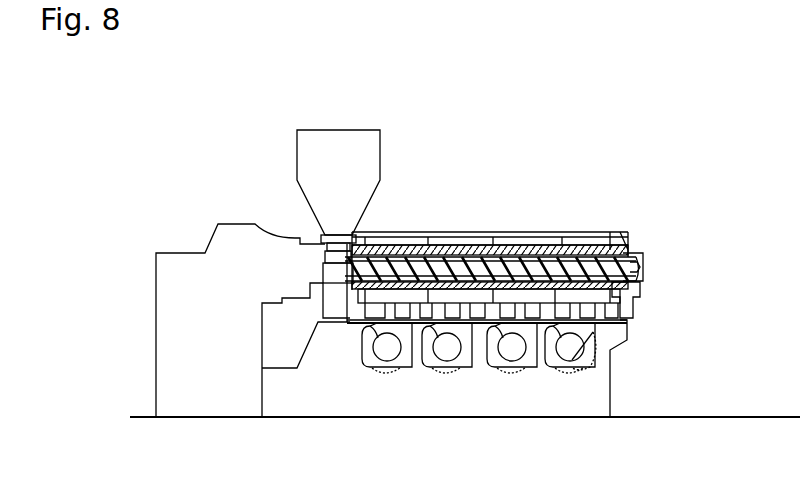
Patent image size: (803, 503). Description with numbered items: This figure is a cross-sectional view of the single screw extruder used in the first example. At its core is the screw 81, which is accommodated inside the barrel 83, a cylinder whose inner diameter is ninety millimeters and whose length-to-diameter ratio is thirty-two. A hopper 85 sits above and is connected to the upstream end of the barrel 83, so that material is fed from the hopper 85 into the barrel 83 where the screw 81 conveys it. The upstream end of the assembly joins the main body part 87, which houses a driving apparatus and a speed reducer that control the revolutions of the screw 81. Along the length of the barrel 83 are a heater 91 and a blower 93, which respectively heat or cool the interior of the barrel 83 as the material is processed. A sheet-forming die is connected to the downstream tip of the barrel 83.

The screw 81 is at (445, 268).
The barrel 83 is at (640, 253).
The hopper 85 is at (352, 130).
The main body part 87 is at (187, 265).
The heater 91 is at (503, 252).
The blower 93 is at (399, 360).